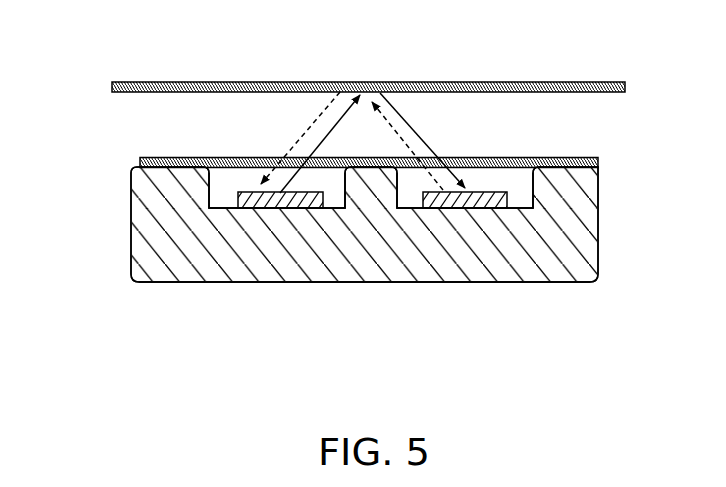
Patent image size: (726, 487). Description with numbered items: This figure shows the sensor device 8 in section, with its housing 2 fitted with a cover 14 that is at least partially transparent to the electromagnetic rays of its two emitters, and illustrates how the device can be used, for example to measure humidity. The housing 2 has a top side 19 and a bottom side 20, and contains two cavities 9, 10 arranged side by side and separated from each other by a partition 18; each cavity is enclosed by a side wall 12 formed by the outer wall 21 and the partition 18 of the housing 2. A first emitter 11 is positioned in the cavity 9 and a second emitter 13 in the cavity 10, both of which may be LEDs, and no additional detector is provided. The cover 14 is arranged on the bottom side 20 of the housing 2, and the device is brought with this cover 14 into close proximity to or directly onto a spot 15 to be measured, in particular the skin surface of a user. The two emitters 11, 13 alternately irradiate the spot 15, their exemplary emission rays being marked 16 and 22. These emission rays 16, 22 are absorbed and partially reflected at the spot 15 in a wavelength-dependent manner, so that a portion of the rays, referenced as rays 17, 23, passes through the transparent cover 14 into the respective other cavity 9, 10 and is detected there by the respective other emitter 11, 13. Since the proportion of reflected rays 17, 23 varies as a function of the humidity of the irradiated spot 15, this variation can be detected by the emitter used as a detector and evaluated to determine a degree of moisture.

The housing 2 is at (601, 246).
The sensor device 8 is at (96, 146).
The cavity 9 is at (228, 200).
The cavity 10 is at (525, 200).
The first emitter 11 is at (285, 197).
The side wall 12 is at (197, 330).
The second emitter 13 is at (480, 207).
The cover 14 is at (519, 162).
The spot 15 is at (393, 82).
The emission ray 16 is at (340, 130).
The reflected ray 17 is at (424, 143).
The partition 18 is at (367, 190).
The top side 19 is at (604, 272).
The bottom side 20 is at (604, 179).
The outer wall 21 is at (165, 197).
The emission ray 22 is at (394, 128).
The reflected ray 23 is at (306, 135).